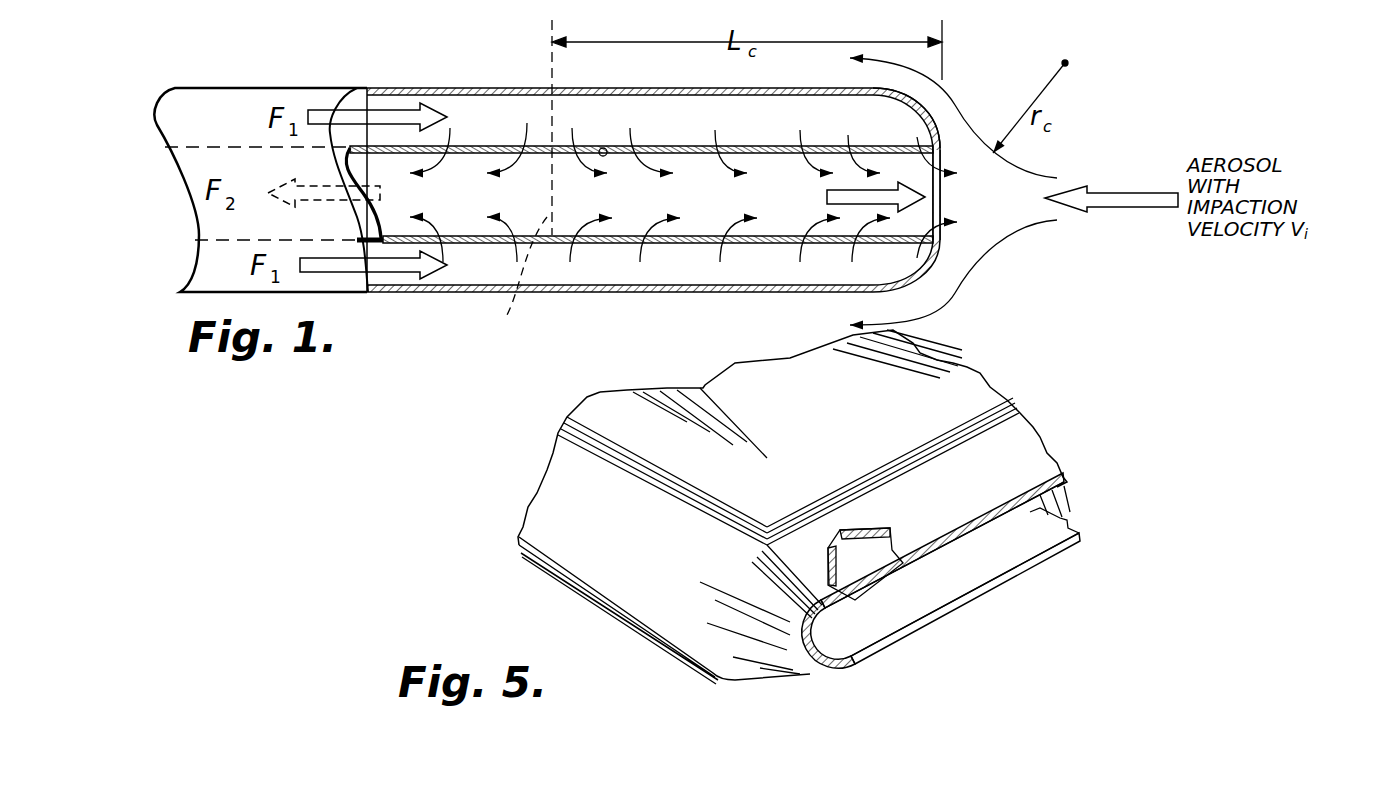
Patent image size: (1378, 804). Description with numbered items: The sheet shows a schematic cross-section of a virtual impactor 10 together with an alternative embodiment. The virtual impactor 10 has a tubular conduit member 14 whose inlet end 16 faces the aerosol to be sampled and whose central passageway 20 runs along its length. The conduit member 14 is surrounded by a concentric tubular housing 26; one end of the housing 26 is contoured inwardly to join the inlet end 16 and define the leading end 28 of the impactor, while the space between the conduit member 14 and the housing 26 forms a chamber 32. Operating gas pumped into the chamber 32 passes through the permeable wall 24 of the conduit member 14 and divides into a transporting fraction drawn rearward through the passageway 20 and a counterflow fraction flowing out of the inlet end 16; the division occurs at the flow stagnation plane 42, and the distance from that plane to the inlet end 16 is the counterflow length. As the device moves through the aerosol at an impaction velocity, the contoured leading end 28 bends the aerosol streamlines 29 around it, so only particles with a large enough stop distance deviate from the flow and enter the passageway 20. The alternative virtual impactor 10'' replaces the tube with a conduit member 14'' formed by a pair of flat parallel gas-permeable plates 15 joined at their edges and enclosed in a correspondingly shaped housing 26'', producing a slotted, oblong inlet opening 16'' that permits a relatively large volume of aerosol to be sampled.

In FIG. 1, the virtual impactor 10 is at (338, 148).
In FIG. 1, the tubular conduit member 14 is at (639, 148).
In FIG. 1, the inlet end 16 is at (906, 111).
In FIG. 1, the central passageway 20 is at (763, 180).
In FIG. 1, the permeable wall 24 is at (608, 148).
In FIG. 1, the tubular housing 26 is at (653, 224).
In FIG. 1, the leading end 28 is at (955, 298).
In FIG. 1, the aerosol streamlines 29 is at (945, 90).
In FIG. 1, the chamber 32 is at (783, 278).
In FIG. 1, the flow stagnation plane 42 is at (508, 310).
In FIG. 5, the virtual impactor 10'' is at (619, 649).
In FIG. 5, the conduit member 14'' is at (952, 569).
In FIG. 5, the flat parallel plates 15 is at (997, 525).
In FIG. 5, the inlet opening 16'' is at (843, 663).
In FIG. 5, the housing 26'' is at (825, 505).